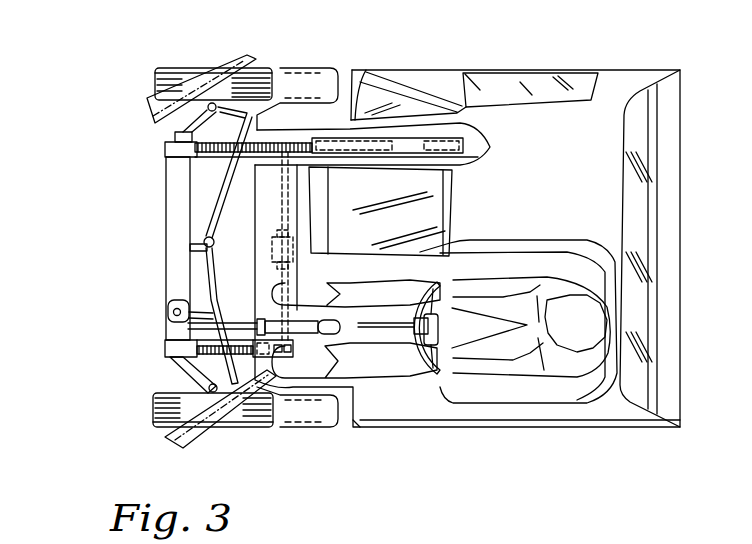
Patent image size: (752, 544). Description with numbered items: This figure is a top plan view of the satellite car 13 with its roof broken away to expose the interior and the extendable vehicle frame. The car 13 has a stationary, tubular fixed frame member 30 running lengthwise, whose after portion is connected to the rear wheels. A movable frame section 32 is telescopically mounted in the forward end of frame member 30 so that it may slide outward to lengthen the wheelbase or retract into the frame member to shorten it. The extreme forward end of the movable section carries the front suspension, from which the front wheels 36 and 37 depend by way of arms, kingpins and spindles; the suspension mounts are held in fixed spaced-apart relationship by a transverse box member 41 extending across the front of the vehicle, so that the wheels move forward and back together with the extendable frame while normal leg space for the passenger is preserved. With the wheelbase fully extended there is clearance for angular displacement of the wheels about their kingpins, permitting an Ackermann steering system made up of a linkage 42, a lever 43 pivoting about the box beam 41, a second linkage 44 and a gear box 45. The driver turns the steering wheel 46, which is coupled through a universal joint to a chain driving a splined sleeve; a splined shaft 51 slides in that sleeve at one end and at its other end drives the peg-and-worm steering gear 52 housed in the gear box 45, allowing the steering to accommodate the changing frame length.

The satellite car 13 is at (88, 341).
The fixed frame member 30 is at (481, 147).
The movable frame section 32 is at (210, 157).
The front wheel 36 is at (170, 78).
The front wheel 37 is at (250, 428).
The box member 41 is at (166, 181).
The linkage 42 is at (220, 190).
The lever 43 is at (204, 242).
The linkage 44 is at (212, 272).
The gear box 45 is at (168, 312).
The steering wheel 46 is at (415, 288).
The splined shaft 51 is at (244, 321).
The peg-and-worm steering gear 52 is at (167, 349).